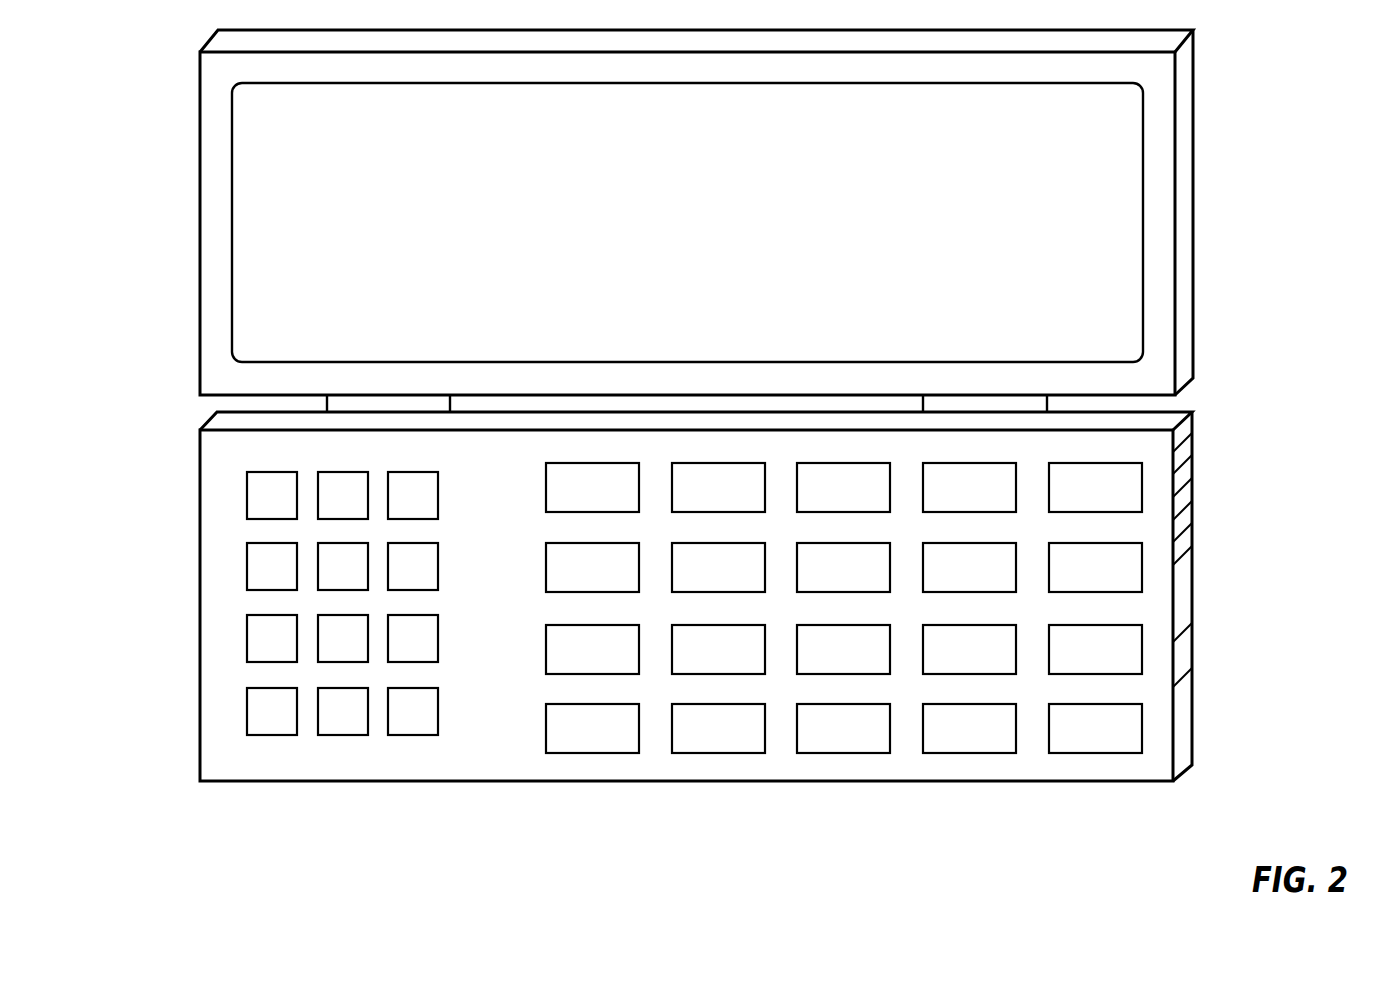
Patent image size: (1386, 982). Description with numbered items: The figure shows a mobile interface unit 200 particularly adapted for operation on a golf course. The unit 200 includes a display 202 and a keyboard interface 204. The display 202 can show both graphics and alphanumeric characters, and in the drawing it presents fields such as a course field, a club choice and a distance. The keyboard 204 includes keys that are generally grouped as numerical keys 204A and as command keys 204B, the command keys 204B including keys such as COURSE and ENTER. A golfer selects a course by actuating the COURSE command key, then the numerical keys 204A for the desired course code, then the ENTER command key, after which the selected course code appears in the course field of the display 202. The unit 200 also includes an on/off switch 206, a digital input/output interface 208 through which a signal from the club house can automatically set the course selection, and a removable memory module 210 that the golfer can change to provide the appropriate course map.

The mobile interface unit 200 is at (1283, 128).
The display 202 is at (253, 187).
The keyboard interface 204 is at (218, 571).
The numerical keys 204A is at (446, 800).
The command keys 204B is at (1152, 805).
The on/off switch 206 is at (1187, 475).
The digital input/output interface 208 is at (1187, 600).
The removable memory module 210 is at (1187, 700).